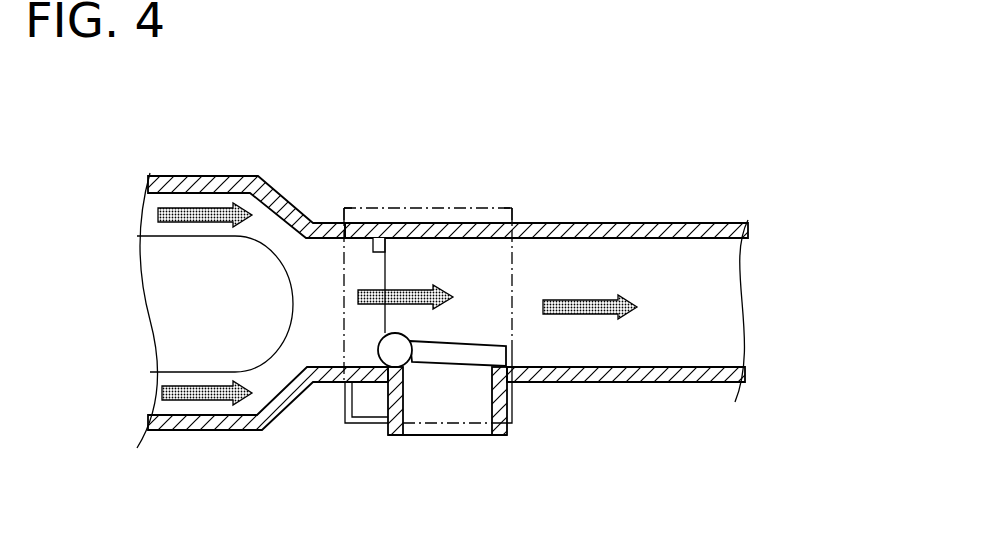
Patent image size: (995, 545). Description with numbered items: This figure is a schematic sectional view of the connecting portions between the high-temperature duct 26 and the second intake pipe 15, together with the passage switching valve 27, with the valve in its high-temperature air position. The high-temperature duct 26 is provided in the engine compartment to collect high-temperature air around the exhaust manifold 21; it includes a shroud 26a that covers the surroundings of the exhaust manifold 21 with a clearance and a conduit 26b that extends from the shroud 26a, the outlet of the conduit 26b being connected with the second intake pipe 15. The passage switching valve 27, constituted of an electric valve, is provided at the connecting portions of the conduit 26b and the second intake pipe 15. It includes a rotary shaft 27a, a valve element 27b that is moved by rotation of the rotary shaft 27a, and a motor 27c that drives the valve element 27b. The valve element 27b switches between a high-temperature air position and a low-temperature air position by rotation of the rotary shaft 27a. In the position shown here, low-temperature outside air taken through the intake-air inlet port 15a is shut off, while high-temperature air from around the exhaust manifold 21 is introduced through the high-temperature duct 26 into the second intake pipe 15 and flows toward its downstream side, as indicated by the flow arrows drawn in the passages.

The second intake pipe 15 is at (608, 223).
The intake-air inlet port 15a is at (465, 428).
The exhaust manifold 21 is at (167, 328).
The high-temperature duct 26 is at (198, 183).
The shroud 26a is at (203, 425).
The conduit 26b is at (370, 237).
The passage switching valve 27 is at (478, 207).
The rotary shaft 27a is at (400, 353).
The valve element 27b is at (500, 355).
The motor 27c is at (367, 410).